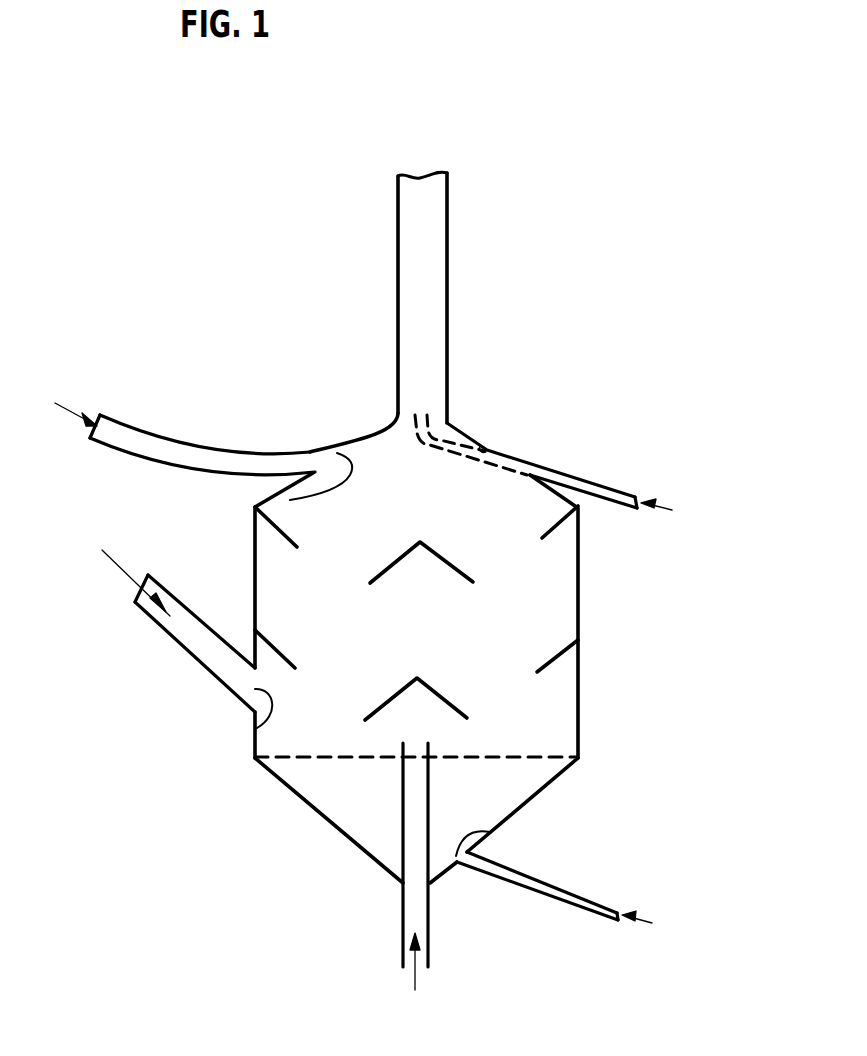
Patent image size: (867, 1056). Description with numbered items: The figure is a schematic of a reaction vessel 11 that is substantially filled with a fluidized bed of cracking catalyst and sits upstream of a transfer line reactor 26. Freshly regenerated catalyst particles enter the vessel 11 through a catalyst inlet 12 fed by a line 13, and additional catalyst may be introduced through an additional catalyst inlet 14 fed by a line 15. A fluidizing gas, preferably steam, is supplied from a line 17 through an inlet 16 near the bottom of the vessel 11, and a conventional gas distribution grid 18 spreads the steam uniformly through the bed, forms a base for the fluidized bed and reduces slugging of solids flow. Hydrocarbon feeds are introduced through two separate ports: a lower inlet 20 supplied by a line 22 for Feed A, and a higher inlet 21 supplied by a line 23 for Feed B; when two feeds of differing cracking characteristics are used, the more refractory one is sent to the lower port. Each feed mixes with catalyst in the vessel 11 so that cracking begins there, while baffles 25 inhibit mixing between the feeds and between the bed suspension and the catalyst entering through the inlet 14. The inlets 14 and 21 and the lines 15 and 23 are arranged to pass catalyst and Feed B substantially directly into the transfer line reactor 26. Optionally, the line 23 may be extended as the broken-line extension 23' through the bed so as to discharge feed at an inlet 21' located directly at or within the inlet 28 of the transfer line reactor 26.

The reaction vessel 11 is at (313, 810).
The catalyst inlet 12 is at (255, 728).
The line 13 is at (160, 636).
The additional catalyst inlet 14 is at (258, 503).
The line 15 is at (262, 452).
The inlet 16 is at (490, 832).
The line 17 is at (573, 907).
The gas distribution grid 18 is at (515, 757).
The inlet 20 is at (422, 742).
The inlet 21 is at (504, 420).
The inlet 21' is at (473, 398).
The line 22 is at (428, 950).
The line 23 is at (587, 478).
The extended line 23' is at (437, 480).
The baffles 25 is at (272, 647).
The transfer line reactor 26 is at (455, 207).
The inlet of the transfer line reactor 28 is at (420, 410).